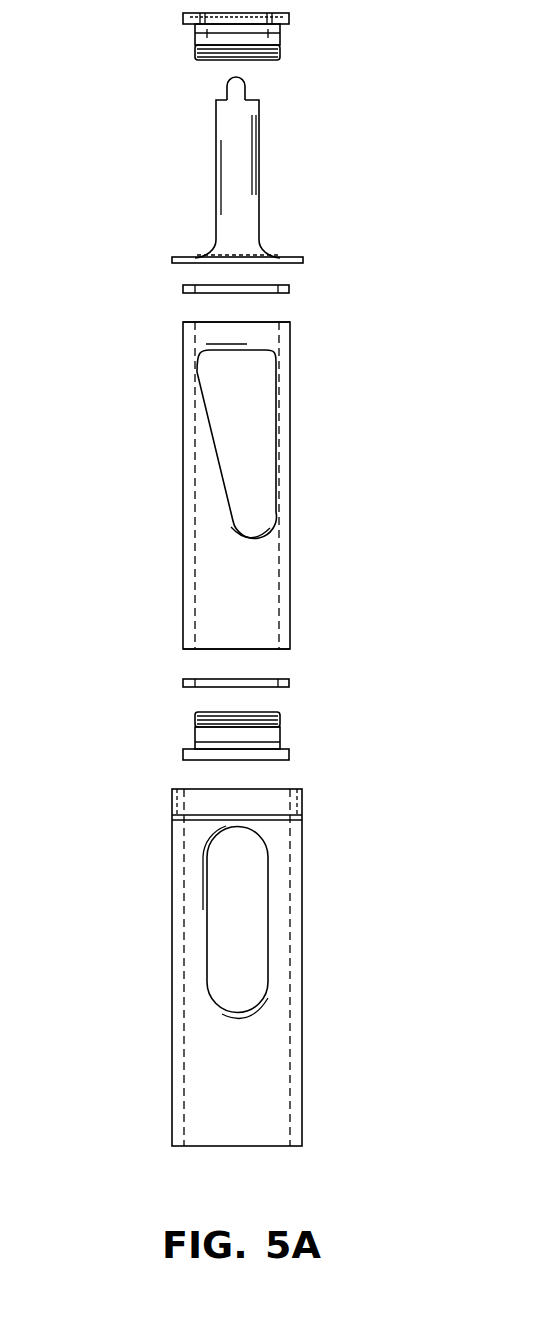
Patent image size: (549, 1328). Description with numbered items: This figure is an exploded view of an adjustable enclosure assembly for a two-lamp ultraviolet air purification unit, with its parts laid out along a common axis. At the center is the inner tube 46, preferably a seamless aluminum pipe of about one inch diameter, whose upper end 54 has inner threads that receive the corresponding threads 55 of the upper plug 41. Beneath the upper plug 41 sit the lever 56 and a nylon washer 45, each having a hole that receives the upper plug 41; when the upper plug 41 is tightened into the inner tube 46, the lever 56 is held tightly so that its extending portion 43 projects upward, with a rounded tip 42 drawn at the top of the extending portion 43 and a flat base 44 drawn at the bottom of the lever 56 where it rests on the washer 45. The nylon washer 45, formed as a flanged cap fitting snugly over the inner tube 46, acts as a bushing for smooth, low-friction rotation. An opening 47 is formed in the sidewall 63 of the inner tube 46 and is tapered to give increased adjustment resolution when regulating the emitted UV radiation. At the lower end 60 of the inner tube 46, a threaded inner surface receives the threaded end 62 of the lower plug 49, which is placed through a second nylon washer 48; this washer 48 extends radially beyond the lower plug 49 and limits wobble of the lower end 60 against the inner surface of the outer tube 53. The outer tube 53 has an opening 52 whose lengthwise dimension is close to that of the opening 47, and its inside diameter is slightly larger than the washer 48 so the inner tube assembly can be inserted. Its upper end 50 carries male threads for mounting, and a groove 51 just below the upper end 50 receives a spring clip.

The upper plug 41 is at (195, 40).
The threads 55 is at (280, 50).
The tip of plunger 42 is at (226, 84).
The extending portion 43 is at (216, 160).
The base plate of plunger 44 is at (172, 260).
The lever 56 is at (259, 212).
The nylon washer 45 is at (183, 289).
The inner tube 46 is at (243, 487).
The upper end 54 is at (290, 322).
The opening 47 is at (225, 482).
The sidewall 63 is at (258, 582).
The lower end 60 is at (290, 648).
The nylon washer 48 is at (183, 682).
The lower plug 49 is at (183, 756).
The threaded end 62 is at (280, 718).
The upper end 50 is at (172, 803).
The groove 51 is at (302, 820).
The opening 52 is at (268, 925).
The outer tube 53 is at (235, 967).